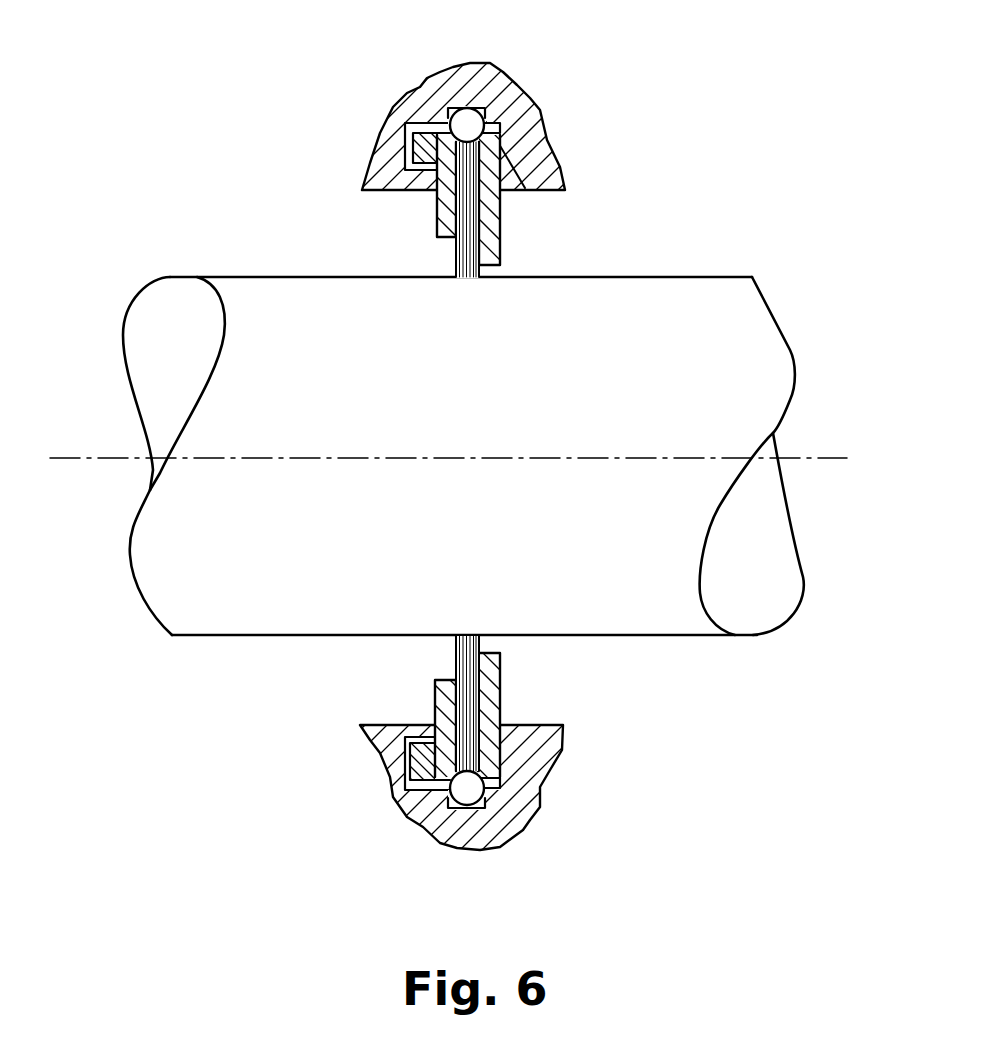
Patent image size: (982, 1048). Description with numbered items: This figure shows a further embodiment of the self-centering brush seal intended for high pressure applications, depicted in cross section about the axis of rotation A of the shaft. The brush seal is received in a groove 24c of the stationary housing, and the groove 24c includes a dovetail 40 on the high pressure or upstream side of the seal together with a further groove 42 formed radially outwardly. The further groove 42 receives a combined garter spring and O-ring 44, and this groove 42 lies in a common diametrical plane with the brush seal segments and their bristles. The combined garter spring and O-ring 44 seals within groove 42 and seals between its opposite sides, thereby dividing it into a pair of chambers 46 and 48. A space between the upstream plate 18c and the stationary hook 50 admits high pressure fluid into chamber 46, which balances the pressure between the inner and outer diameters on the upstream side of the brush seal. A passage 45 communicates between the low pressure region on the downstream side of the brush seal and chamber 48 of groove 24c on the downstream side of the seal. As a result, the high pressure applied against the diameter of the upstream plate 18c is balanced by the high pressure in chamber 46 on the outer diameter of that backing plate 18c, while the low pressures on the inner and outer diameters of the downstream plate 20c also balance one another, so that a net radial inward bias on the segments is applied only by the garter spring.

The further groove 42 is at (430, 85).
The combined garter spring and O-ring 44 is at (467, 110).
The passage 45 is at (557, 167).
The chamber 46 is at (405, 123).
The chamber 48 is at (490, 122).
The dovetail 40 is at (390, 157).
The stationary hook 50 is at (418, 177).
The downstream plate 20c is at (493, 673).
The upstream plate 18c is at (405, 783).
The groove 24c is at (417, 825).
The axis of rotation A is at (813, 462).